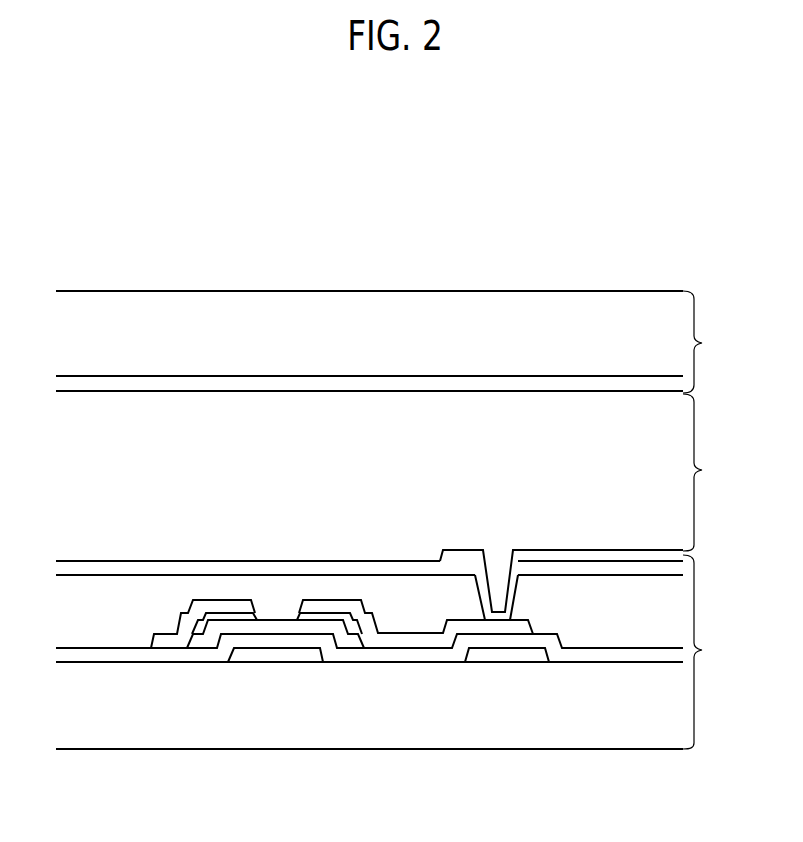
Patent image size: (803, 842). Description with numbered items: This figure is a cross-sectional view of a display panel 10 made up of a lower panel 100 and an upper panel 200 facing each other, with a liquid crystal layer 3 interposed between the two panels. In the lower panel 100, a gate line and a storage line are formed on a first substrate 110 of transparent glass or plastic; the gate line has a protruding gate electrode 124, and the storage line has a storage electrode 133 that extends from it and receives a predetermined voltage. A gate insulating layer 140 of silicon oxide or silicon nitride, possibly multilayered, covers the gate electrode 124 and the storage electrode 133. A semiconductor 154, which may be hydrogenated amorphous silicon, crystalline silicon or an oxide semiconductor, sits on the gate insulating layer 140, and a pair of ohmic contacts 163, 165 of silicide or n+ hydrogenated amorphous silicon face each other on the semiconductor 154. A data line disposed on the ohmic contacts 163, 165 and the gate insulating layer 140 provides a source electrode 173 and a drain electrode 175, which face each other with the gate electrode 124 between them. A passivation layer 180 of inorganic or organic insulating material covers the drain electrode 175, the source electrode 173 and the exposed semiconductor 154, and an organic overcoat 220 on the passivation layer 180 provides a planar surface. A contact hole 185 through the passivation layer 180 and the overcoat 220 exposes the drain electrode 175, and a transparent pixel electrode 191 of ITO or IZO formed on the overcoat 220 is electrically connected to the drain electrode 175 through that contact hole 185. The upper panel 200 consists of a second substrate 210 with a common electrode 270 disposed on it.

The display panel 10 is at (130, 237).
The upper panel 200 is at (713, 342).
The second substrate 210 is at (307, 307).
The common electrode 270 is at (208, 382).
The liquid crystal layer 3 is at (700, 472).
The lower panel 100 is at (713, 652).
The overcoat 220 is at (343, 566).
The passivation layer 180 is at (623, 618).
The contact hole 185 is at (518, 583).
The pixel electrode 191 is at (457, 552).
The first substrate 110 is at (580, 743).
The gate electrode 124 is at (292, 655).
The storage electrode 133 is at (490, 655).
The gate insulating layer 140 is at (435, 655).
The semiconductor 154 is at (257, 627).
The ohmic contact 163 is at (193, 640).
The ohmic contact 165 is at (355, 635).
The source electrode 173 is at (160, 642).
The drain electrode 175 is at (392, 642).